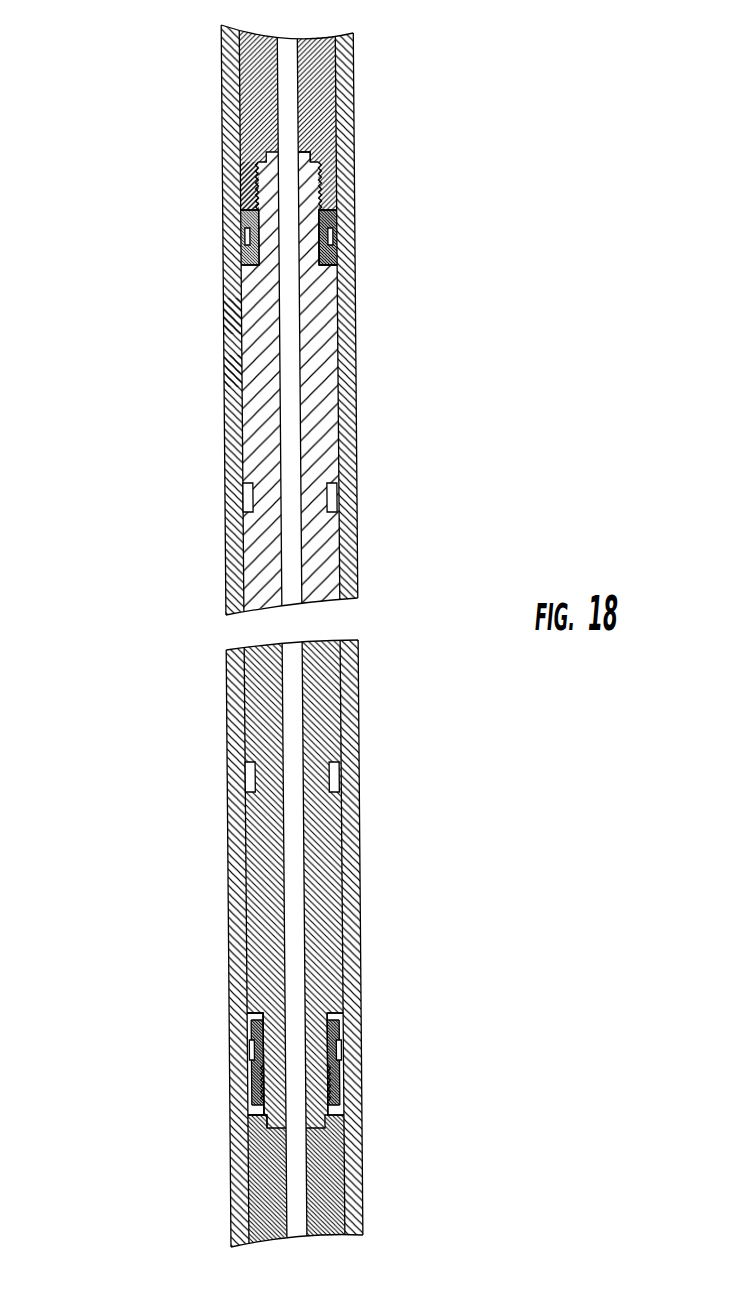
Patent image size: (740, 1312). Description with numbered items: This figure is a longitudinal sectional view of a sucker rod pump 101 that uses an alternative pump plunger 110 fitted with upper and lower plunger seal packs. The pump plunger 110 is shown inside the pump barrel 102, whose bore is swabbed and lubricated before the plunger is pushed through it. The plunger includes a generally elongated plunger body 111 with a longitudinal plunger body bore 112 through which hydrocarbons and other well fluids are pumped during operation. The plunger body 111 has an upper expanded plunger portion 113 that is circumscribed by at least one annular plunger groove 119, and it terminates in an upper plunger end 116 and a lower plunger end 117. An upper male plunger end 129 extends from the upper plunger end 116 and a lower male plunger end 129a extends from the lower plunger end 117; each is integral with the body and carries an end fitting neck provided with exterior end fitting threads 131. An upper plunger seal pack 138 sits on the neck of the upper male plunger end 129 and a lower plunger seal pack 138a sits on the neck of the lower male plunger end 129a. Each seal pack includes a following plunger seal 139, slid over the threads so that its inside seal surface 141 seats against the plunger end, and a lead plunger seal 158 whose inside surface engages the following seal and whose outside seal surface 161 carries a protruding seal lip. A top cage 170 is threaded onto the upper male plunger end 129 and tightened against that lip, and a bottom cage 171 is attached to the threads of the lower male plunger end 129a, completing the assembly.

The sucker rod pump 101 is at (133, 60).
The pump barrel 102 is at (212, 136).
The pump plunger 110 is at (214, 308).
The plunger body 111 is at (229, 368).
The plunger body bore 112 is at (290, 452).
The upper expanded plunger portion 113 is at (313, 395).
The upper plunger end 116 is at (336, 252).
The lower plunger end 117 is at (250, 1032).
The annular plunger groove 119 is at (243, 495).
The upper male plunger end 129 is at (341, 153).
The lower male plunger end 129a is at (233, 1137).
The end fitting threads 131 is at (342, 188).
The upper plunger seal pack 138 is at (351, 222).
The lower plunger seal pack 138a is at (366, 1015).
The following plunger seal 139 is at (240, 268).
The inside seal surface 141 is at (330, 270).
The lead plunger seal 158 is at (231, 229).
The outside seal surface 161 is at (242, 182).
The top cage 170 is at (322, 118).
The bottom cage 171 is at (322, 1145).